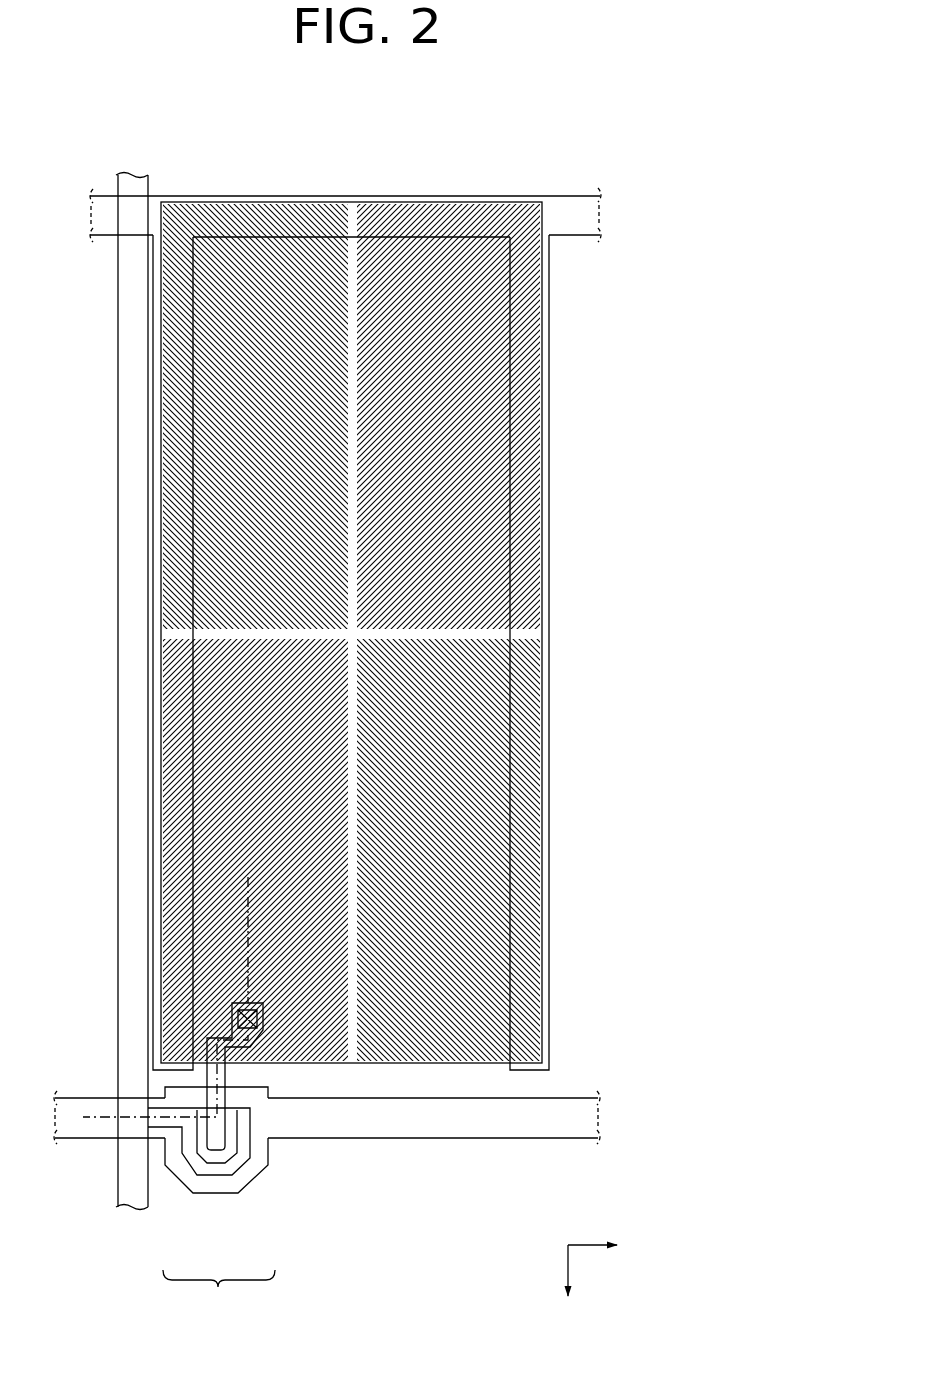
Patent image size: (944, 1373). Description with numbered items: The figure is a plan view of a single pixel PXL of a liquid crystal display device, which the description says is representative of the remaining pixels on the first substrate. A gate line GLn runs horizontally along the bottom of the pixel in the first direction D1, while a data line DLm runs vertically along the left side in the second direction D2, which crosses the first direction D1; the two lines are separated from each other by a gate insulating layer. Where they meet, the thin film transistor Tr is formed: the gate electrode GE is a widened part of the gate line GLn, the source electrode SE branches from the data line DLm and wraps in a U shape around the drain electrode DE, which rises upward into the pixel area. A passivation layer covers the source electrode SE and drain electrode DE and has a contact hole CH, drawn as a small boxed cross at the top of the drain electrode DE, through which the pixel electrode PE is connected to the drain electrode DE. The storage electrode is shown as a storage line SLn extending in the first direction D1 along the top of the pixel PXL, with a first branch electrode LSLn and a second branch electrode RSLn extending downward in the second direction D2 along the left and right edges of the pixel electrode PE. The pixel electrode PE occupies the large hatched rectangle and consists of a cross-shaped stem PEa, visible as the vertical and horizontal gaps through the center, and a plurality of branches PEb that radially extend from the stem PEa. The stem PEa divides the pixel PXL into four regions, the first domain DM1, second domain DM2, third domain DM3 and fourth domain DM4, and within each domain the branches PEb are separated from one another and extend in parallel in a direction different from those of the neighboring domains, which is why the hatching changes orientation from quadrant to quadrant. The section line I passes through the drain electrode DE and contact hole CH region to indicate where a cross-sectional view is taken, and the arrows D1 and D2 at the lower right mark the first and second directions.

The pixel PXL is at (364, 181).
The storage line SLn is at (346, 249).
The first branch electrode LSLn is at (153, 322).
The second branch electrode RSLn is at (549, 346).
The pixel electrode PE is at (648, 395).
The stem PEa is at (352, 468).
The branches PEb is at (468, 421).
The first domain DM1 is at (237, 793).
The second domain DM2 is at (233, 548).
The third domain DM3 is at (469, 548).
The fourth domain DM4 is at (469, 783).
The data line DLm is at (118, 705).
The gate line GLn is at (455, 1142).
The gate electrode GE is at (258, 1190).
The source electrode SE is at (218, 1195).
The drain electrode DE is at (185, 1198).
The contact hole CH is at (232, 1020).
The thin film transistor Tr is at (219, 1293).
The section line I-I' I is at (248, 877).
The first direction D1 is at (611, 1247).
The second direction D2 is at (570, 1286).